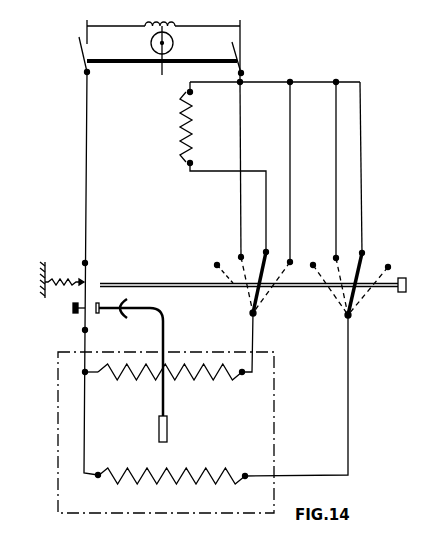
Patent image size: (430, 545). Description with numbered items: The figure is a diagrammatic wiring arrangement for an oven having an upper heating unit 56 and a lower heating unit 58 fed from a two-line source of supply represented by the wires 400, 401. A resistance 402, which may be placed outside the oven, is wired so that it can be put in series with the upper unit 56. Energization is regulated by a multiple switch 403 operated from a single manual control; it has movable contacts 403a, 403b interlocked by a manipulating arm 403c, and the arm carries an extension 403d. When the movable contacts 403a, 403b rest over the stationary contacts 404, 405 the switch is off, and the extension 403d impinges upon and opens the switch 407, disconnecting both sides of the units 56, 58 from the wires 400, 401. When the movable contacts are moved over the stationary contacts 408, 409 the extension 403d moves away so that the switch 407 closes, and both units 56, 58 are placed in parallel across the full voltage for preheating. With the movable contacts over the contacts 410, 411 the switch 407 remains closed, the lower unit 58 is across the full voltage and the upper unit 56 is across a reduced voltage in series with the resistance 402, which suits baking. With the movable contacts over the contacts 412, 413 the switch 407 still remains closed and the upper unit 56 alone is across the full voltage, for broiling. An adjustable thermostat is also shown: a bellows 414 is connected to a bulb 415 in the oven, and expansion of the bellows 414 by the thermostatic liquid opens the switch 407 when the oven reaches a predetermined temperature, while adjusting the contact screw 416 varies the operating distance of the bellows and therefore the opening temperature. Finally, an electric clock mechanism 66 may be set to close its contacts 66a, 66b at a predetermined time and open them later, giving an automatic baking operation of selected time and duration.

The wire 400 is at (87, 24).
The wire 401 is at (240, 26).
The electric clock mechanism 66 is at (173, 43).
The contact 66a is at (87, 43).
The contact 66b is at (241, 47).
The resistance 402 is at (190, 118).
The multiple switch 403 is at (300, 313).
The movable contact 403a is at (250, 308).
The movable contact 403b is at (342, 295).
The manipulating arm 403c is at (374, 289).
The extension 403d is at (103, 286).
The stationary contact 404 is at (217, 265).
The stationary contact 405 is at (313, 264).
The switch 407 is at (88, 262).
The stationary contact 408 is at (241, 255).
The stationary contact 409 is at (336, 256).
The contact 410 is at (266, 250).
The contact 411 is at (363, 252).
The contact 412 is at (284, 262).
The contact 413 is at (388, 266).
The bellows 414 is at (118, 320).
The bulb 415 is at (168, 430).
The contact screw 416 is at (73, 308).
The upper heating unit 56 is at (187, 392).
The lower heating unit 58 is at (186, 474).